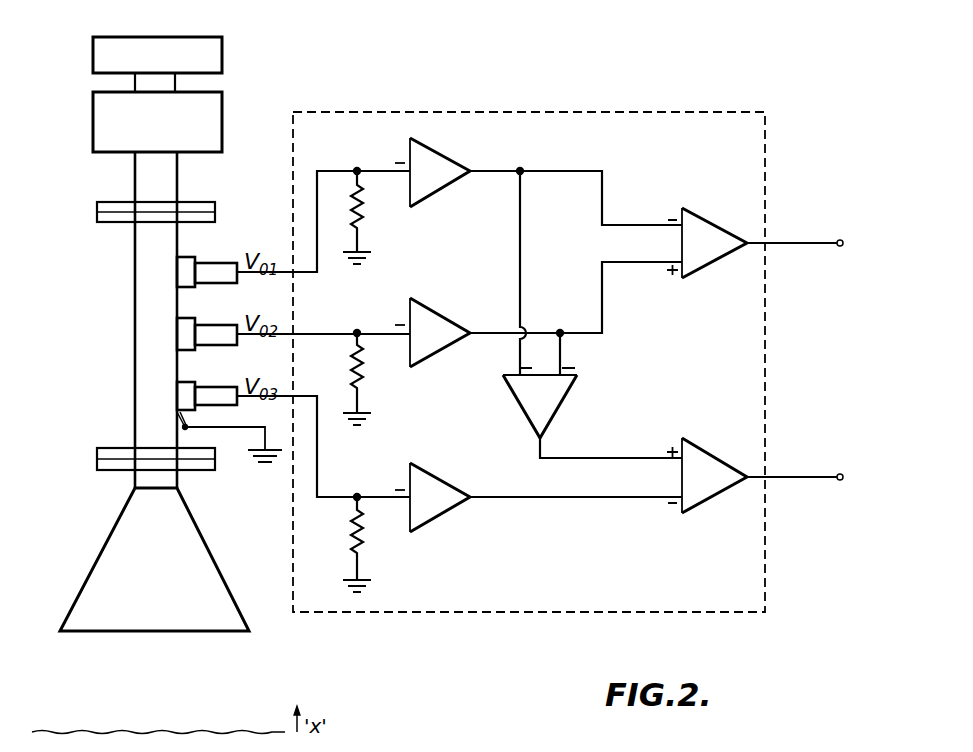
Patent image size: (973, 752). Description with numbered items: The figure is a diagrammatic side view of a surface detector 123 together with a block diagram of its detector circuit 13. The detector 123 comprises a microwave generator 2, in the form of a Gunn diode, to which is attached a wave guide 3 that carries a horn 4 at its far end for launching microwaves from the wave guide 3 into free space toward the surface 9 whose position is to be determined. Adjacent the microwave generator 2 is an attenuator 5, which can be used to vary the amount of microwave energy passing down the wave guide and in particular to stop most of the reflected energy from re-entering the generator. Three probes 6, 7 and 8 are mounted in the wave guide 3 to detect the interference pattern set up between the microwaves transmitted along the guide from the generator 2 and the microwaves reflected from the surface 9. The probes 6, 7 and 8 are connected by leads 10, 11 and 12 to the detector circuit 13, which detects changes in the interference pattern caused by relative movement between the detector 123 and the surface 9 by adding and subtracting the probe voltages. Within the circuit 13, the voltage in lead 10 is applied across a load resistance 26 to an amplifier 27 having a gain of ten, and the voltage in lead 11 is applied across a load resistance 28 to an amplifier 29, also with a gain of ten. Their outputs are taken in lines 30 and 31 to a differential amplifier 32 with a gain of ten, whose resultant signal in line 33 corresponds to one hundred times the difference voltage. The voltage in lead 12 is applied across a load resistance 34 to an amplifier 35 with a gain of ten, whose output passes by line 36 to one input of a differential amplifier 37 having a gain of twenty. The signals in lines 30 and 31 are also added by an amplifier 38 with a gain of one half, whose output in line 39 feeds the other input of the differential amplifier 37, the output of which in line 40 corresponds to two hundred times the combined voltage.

The microwave generator 2 is at (222, 55).
The wave guide 3 is at (133, 322).
The horn 4 is at (103, 552).
The attenuator 5 is at (222, 122).
The probe 6 is at (210, 263).
The probe 7 is at (207, 326).
The probe 8 is at (207, 388).
The surface 9 is at (228, 732).
The lead 10 is at (286, 270).
The lead 11 is at (286, 332).
The lead 12 is at (286, 395).
The detector circuit 13 is at (765, 348).
The load resistance 26 is at (352, 200).
The amplifier 27 is at (430, 151).
The load resistance 28 is at (352, 366).
The amplifier 29 is at (428, 310).
The line 30 is at (565, 169).
The line 31 is at (601, 298).
The differential amplifier 32 is at (718, 226).
The line 33 is at (798, 241).
The load resistance 34 is at (352, 540).
The amplifier 35 is at (428, 473).
The line 36 is at (582, 500).
The differential amplifier 37 is at (700, 453).
The amplifier 38 is at (563, 400).
The line 39 is at (575, 457).
The line 40 is at (795, 476).
The detector 123 is at (126, 320).